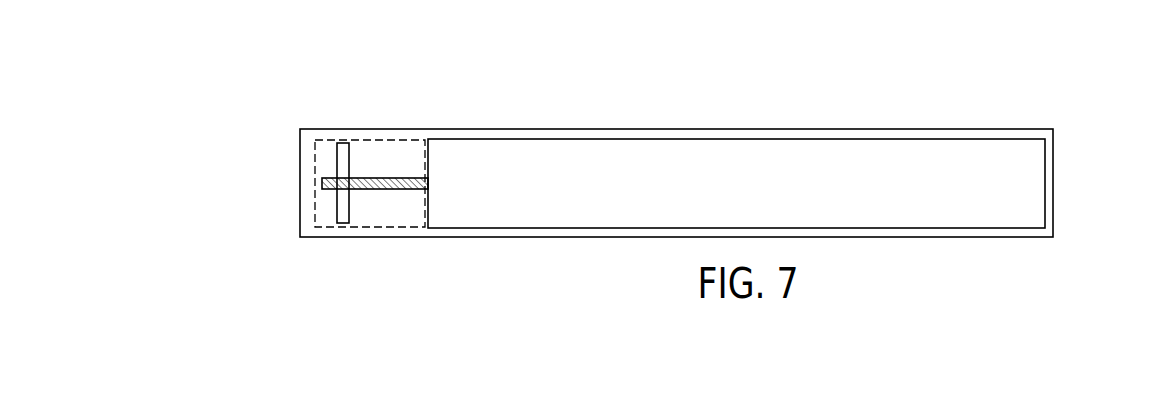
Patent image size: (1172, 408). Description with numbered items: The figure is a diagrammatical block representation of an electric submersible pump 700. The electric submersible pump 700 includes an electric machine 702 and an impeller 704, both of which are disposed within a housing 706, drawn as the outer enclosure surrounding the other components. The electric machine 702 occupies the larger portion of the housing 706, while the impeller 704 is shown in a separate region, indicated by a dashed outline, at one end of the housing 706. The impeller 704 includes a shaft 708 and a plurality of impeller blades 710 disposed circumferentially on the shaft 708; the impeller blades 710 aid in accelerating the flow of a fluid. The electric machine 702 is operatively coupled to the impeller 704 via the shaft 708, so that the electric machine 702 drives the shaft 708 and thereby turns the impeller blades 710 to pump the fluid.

The electric submersible pump 700 is at (1052, 70).
The electric machine 702 is at (737, 138).
The impeller 704 is at (385, 140).
The housing 706 is at (922, 128).
The shaft 708 is at (317, 178).
The impeller blades 710 is at (350, 160).